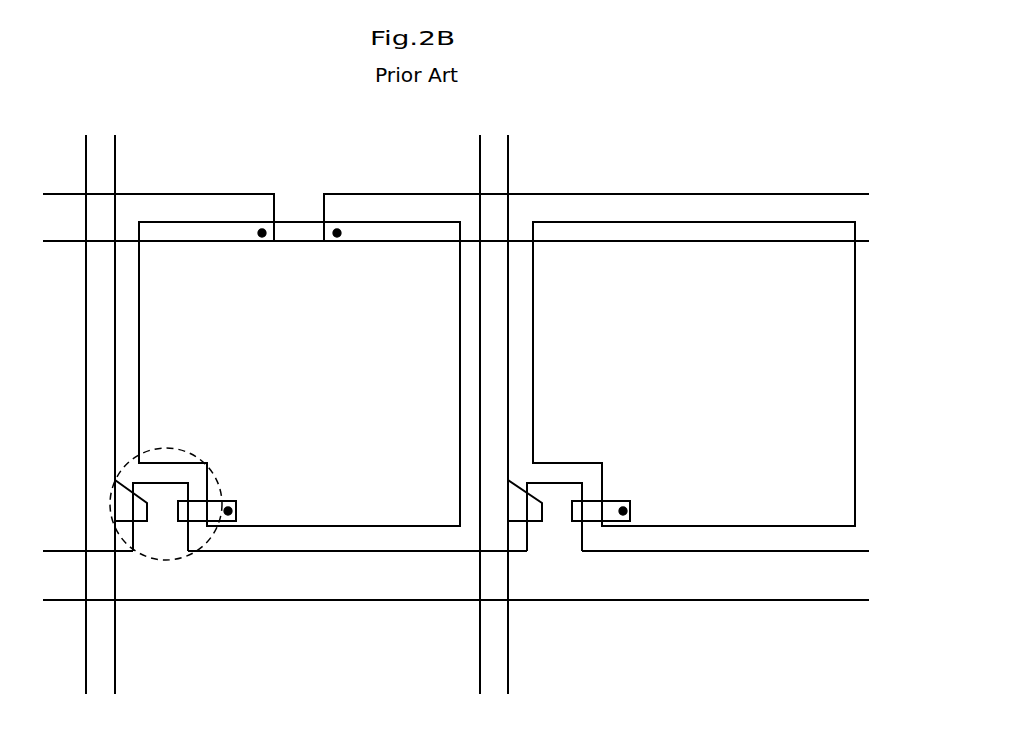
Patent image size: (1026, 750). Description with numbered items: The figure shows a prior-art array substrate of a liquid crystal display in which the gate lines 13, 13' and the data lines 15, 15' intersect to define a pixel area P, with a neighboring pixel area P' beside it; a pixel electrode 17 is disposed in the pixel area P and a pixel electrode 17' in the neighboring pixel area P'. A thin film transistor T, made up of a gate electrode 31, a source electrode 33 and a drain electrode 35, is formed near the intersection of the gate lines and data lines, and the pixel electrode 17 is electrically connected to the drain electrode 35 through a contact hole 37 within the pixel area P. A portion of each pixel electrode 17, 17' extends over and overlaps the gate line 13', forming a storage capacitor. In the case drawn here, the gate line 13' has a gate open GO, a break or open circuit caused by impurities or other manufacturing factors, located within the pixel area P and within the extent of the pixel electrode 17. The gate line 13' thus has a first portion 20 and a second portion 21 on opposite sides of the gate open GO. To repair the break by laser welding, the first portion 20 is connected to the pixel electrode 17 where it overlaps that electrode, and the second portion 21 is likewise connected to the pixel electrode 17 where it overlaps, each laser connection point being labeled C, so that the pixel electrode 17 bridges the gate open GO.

The gate line 13' is at (448, 184).
The gate line 13 is at (452, 541).
The data line 15 is at (140, 414).
The data line 15' is at (549, 414).
The pixel electrode 17 is at (248, 374).
The pixel electrode 17' is at (694, 332).
The first portion 20 is at (233, 200).
The second portion 21 is at (362, 200).
The gate open GO is at (308, 200).
The connection point C is at (262, 240).
The gate electrode 31 is at (162, 529).
The source electrode 33 is at (147, 503).
The drain electrode 35 is at (192, 518).
The contact hole 37 is at (230, 511).
The thin film transistor T is at (216, 476).
The pixel area P is at (86, 387).
The neighboring pixel area P' is at (880, 443).